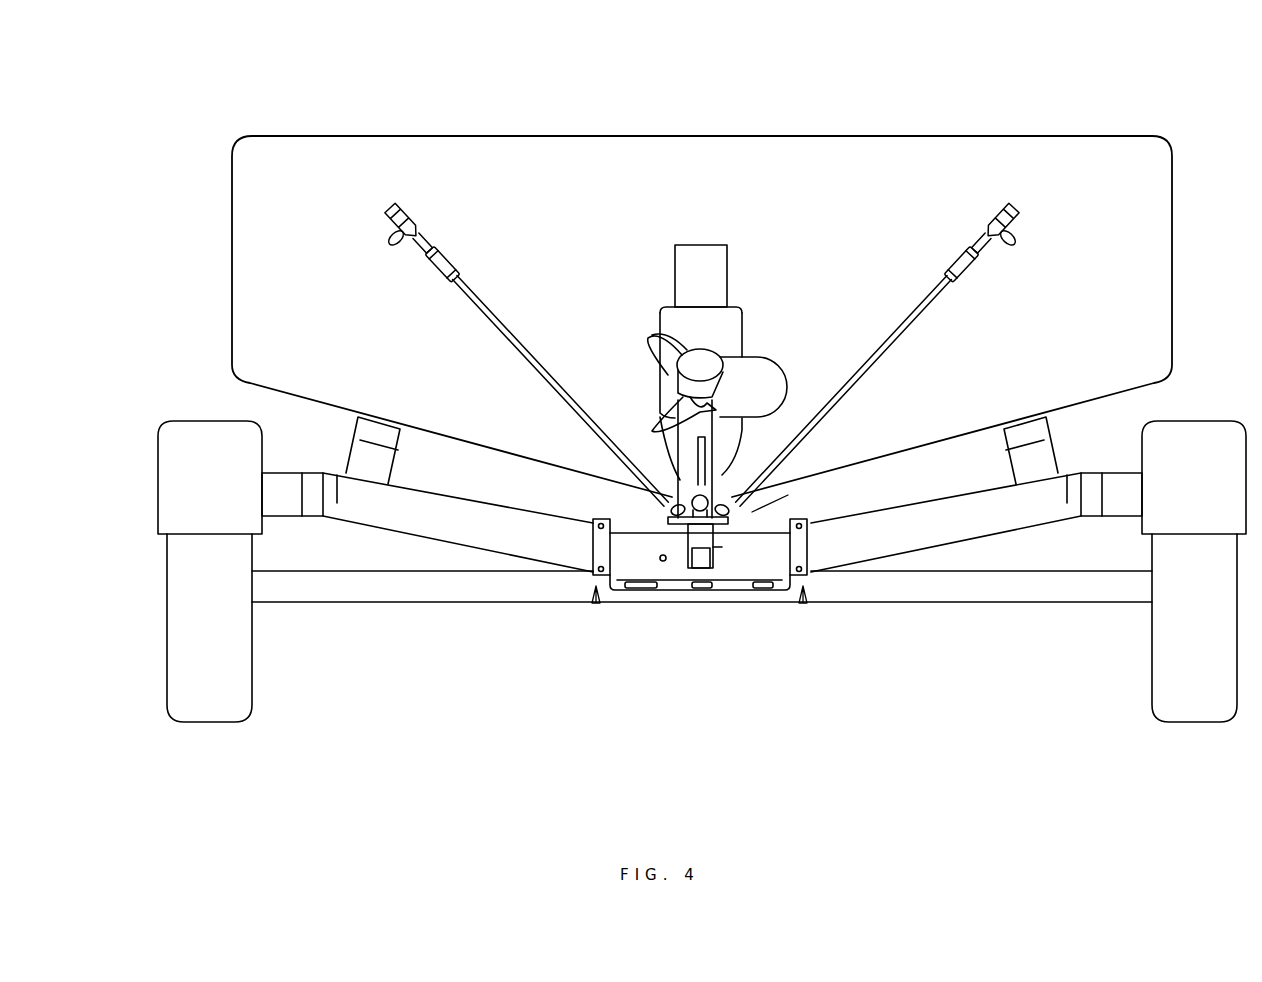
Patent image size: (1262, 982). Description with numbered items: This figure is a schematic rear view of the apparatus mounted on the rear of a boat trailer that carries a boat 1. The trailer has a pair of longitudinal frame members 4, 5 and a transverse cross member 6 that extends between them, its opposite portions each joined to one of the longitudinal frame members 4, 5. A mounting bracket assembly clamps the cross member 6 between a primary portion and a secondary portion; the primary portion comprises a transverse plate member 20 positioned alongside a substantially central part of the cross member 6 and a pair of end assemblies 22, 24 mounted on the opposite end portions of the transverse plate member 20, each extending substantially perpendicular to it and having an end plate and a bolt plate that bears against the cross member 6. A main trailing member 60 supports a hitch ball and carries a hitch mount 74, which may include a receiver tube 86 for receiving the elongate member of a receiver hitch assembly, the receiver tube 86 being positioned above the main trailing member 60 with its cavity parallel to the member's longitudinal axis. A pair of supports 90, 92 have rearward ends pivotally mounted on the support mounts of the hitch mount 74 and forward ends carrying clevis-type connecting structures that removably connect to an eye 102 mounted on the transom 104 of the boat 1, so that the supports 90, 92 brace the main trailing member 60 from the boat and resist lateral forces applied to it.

The boat 1 is at (727, 120).
The longitudinal frame member 4 is at (310, 517).
The longitudinal frame member 5 is at (1083, 525).
The transverse cross member 6 is at (452, 523).
The transverse plate member 20 is at (757, 560).
The end assembly 22 is at (595, 603).
The end assembly 24 is at (803, 603).
The main trailing member 60 is at (713, 568).
The hitch mount 74 is at (752, 512).
The receiver tube 86 is at (688, 535).
The support 90 is at (505, 318).
The support 92 is at (895, 318).
The eye 102 is at (392, 205).
The transom 104 is at (1015, 205).